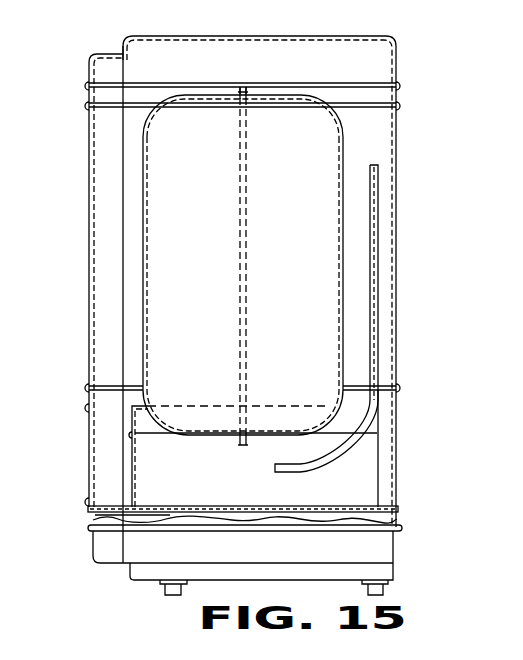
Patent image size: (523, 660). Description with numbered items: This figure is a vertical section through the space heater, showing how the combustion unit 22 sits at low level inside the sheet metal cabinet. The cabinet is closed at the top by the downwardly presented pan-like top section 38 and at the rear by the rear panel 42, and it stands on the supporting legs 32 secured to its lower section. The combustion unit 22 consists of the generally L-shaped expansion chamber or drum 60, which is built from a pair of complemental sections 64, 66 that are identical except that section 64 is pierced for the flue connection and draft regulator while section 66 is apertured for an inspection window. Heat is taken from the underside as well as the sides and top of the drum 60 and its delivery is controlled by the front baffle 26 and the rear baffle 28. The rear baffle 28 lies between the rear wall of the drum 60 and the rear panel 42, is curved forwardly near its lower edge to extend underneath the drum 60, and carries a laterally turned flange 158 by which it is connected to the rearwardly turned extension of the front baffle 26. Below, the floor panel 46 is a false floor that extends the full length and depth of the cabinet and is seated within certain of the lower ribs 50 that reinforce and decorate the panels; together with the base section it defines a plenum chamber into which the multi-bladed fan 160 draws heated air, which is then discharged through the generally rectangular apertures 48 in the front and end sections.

The combustion unit 22 is at (284, 266).
The front baffle 26 is at (137, 461).
The rear baffle 28 is at (355, 336).
The supporting legs 32 is at (164, 588).
The top section 38 is at (372, 37).
The rear panel 42 is at (398, 193).
The floor panel 46 is at (110, 519).
The apertures 48 is at (296, 531).
The ribs 50 is at (88, 509).
The expansion chamber or drum 60 is at (340, 125).
The complemental section 64 is at (340, 258).
The complemental section 66 is at (149, 248).
The laterally turned flange 158 is at (334, 469).
The multi-bladed fan 160 is at (136, 504).